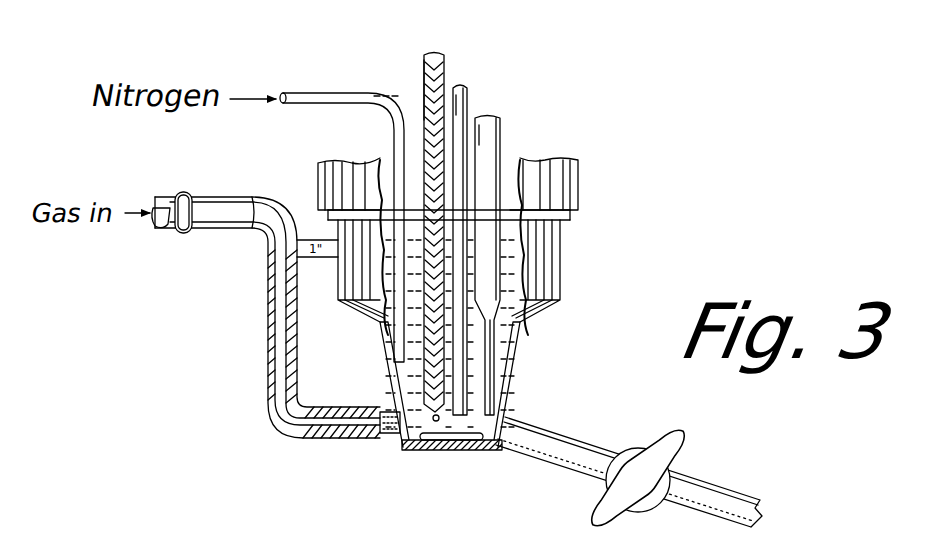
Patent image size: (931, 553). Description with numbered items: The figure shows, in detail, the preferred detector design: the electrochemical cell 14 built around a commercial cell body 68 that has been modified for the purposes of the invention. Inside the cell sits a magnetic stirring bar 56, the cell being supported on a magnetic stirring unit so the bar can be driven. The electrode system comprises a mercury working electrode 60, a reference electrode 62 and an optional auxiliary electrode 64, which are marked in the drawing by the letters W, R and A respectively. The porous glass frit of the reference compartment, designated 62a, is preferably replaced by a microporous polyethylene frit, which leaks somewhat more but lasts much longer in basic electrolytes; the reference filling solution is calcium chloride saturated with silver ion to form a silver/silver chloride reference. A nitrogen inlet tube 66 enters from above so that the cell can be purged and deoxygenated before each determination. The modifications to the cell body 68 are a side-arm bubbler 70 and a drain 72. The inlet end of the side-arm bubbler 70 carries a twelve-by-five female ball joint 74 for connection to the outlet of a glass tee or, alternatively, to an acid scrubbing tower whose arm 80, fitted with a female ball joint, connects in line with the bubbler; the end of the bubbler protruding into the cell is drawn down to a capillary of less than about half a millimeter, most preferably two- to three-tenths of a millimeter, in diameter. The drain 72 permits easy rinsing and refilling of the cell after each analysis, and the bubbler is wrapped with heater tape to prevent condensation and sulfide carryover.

The electrochemical cell 14 is at (582, 258).
The magnetic stirring bar 56 is at (438, 450).
The mercury working electrode 60 is at (437, 67).
The electrode wire W is at (428, 98).
The reference electrode 62 is at (494, 135).
The porous glass frit 62a is at (492, 416).
The auxiliary electrode 64 is at (468, 112).
The tube A is at (460, 110).
The tube R is at (487, 123).
The nitrogen inlet tube 66 is at (326, 94).
The cell body 68 is at (545, 284).
The side-arm bubbler 70 is at (266, 315).
The drain 72 is at (564, 480).
The female ball joint 74 is at (178, 194).
The outlet arm 80 is at (418, 378).